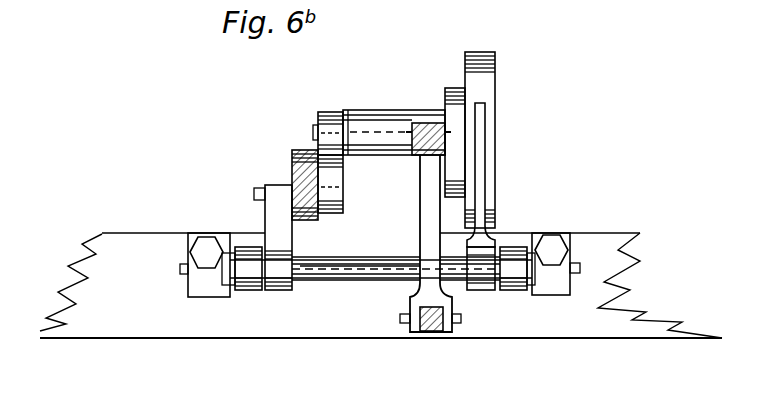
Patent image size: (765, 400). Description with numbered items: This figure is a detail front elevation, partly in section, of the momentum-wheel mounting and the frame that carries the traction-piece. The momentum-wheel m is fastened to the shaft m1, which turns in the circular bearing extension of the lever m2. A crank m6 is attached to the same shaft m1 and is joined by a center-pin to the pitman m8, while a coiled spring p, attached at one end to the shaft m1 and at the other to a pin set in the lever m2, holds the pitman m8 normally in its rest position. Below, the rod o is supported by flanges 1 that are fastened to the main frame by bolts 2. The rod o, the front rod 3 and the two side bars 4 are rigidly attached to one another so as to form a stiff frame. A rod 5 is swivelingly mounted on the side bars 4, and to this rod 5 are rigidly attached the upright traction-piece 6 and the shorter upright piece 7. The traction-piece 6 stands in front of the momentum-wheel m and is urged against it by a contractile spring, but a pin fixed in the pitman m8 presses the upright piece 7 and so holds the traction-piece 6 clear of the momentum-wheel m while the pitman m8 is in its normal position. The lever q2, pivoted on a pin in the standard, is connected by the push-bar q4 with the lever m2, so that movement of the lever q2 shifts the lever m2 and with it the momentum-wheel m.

The flanges 1 is at (196, 281).
The bolts 2 is at (206, 248).
The rod o is at (180, 268).
The front rod 3 is at (331, 278).
The side bars 4 is at (249, 291).
The rod 5 is at (333, 266).
The traction-piece 6 is at (483, 152).
The upright piece 7 is at (273, 237).
The momentum-wheel m is at (496, 77).
The shaft m1 is at (316, 124).
The lever m2 is at (428, 156).
The crank m6 is at (333, 166).
The pitman m8 is at (292, 172).
The coiled spring p is at (447, 91).
The lever q2 is at (431, 333).
The push-bar q4 is at (419, 210).